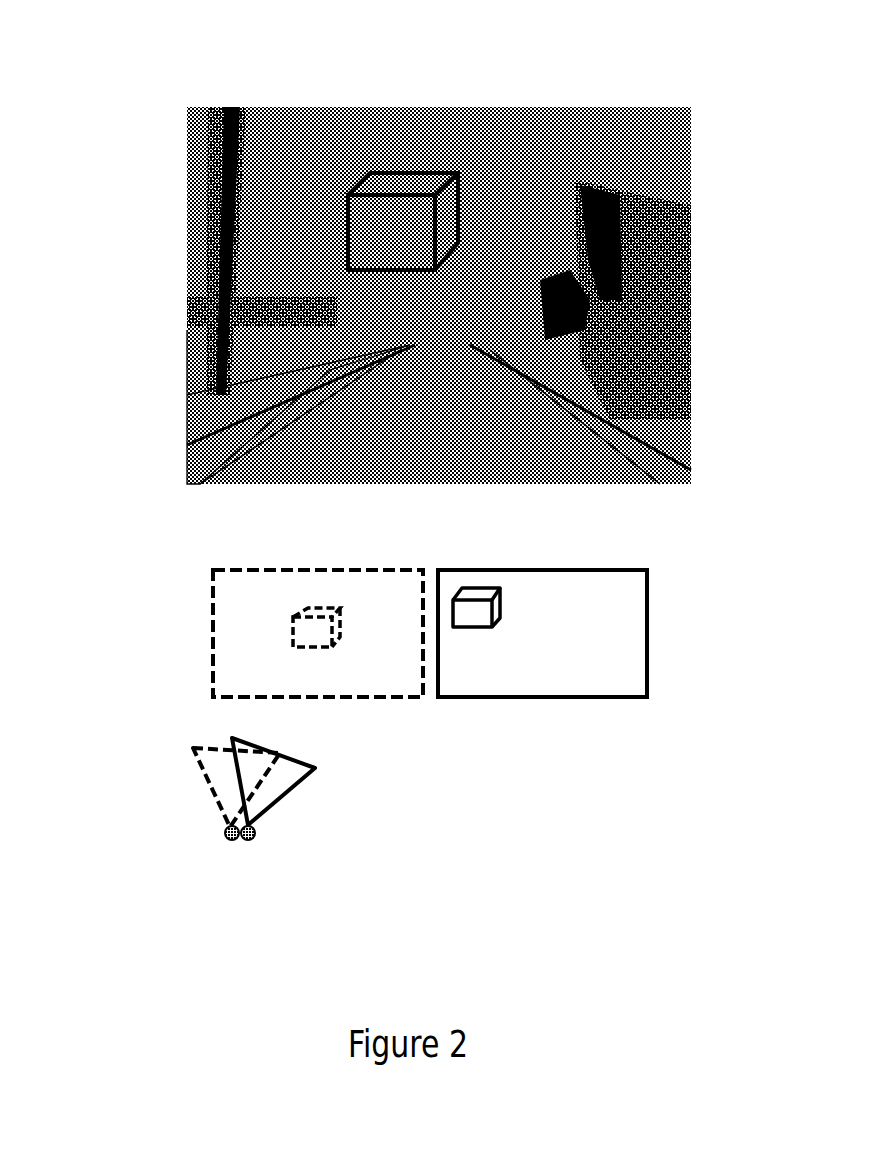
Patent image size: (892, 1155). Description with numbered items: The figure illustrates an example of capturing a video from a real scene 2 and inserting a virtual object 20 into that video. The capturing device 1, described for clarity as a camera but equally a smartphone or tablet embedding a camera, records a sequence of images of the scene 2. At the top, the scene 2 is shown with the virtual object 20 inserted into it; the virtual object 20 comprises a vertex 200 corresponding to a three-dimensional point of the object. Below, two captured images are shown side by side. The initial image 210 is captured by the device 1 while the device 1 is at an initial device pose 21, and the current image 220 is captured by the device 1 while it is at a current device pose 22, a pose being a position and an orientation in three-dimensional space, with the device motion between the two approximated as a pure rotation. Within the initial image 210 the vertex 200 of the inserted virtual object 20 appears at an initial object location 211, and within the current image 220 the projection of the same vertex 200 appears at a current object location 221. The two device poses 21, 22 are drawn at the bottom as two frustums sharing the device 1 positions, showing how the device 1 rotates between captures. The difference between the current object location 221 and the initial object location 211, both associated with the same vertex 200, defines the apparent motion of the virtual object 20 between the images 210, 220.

The device 1 is at (242, 840).
The scene 2 is at (187, 238).
The virtual object 20 is at (392, 223).
The vertex 200 is at (456, 172).
The initial device pose 21 is at (205, 787).
The current device pose 22 is at (285, 802).
The initial image 210 is at (213, 627).
The initial object location 211 is at (337, 613).
The current image 220 is at (649, 623).
The current object location 221 is at (500, 588).